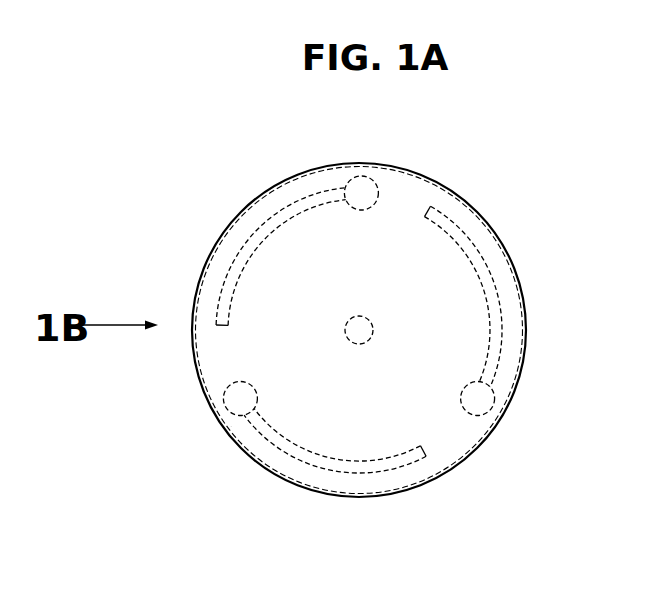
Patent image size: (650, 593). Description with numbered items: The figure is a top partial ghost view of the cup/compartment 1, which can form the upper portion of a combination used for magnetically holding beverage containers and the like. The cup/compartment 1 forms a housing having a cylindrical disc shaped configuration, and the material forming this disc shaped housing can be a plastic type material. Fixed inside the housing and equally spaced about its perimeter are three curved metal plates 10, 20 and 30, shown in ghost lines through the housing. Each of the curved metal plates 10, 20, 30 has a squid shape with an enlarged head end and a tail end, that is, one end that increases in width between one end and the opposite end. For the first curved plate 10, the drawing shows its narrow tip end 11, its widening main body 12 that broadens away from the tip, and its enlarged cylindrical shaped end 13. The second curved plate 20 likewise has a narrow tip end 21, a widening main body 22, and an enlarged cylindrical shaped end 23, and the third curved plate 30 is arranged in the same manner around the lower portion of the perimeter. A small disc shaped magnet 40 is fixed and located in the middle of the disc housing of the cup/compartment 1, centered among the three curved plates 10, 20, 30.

The cup/compartment 1 is at (427, 180).
The curved metal plate 10 is at (319, 172).
The narrow tip end 11 is at (226, 331).
The widening main body 12 is at (292, 215).
The enlarged cylindrical shaped end 13 is at (361, 200).
The curved metal plate 20 is at (506, 275).
The narrow tip end 21 is at (428, 212).
The widening main body 22 is at (488, 328).
The enlarged cylindrical shaped end 23 is at (480, 399).
The curved metal plate 30 is at (310, 478).
The disc shaped magnet 40 is at (349, 320).